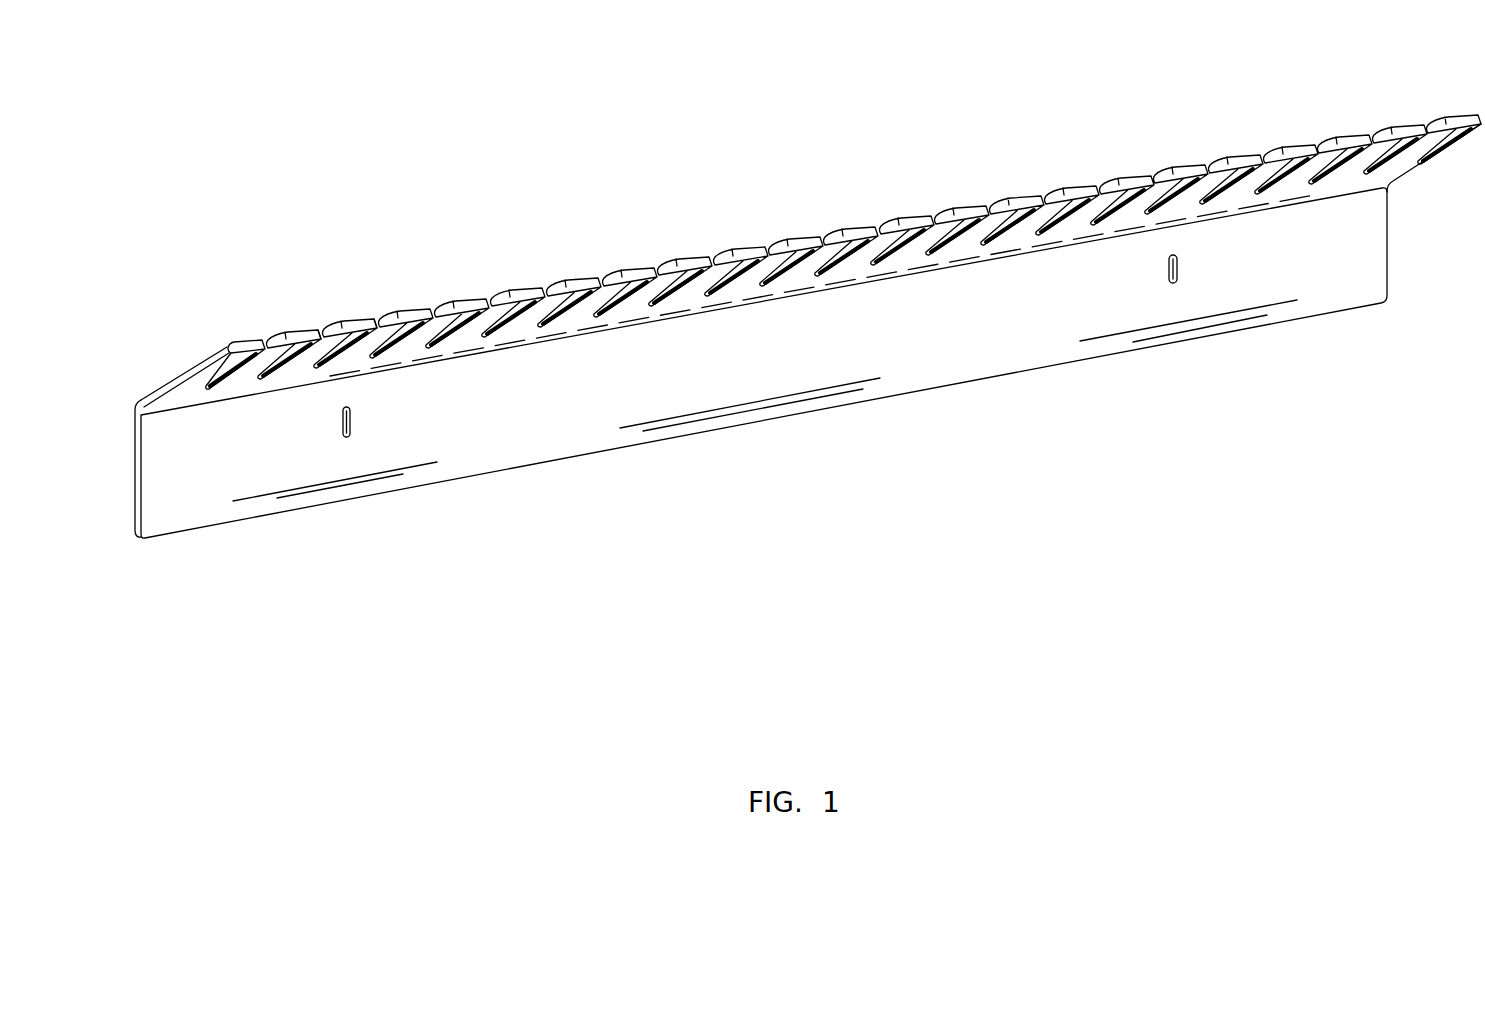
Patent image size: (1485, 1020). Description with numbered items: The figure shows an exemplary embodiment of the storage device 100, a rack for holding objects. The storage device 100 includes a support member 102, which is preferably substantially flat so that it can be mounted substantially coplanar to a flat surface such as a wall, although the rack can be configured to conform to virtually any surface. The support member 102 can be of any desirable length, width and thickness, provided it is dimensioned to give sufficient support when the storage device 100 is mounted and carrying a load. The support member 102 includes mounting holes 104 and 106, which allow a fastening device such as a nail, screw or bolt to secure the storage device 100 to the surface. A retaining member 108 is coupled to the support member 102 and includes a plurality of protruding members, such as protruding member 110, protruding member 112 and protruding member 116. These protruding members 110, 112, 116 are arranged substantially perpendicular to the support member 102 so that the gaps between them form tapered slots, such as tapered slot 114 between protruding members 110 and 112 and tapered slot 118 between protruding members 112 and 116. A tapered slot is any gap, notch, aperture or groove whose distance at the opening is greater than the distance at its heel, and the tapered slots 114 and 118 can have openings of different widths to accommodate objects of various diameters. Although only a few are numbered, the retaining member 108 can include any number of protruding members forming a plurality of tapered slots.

The storage device 100 is at (795, 324).
The support member 102 is at (718, 446).
The mounting hole 104 is at (340, 455).
The mounting hole 106 is at (1180, 293).
The retaining member 108 is at (172, 370).
The protruding member 110 is at (297, 323).
The protruding member 112 is at (355, 318).
The tapered slot 114 is at (325, 322).
The protruding member 116 is at (417, 311).
The tapered slot 118 is at (381, 318).